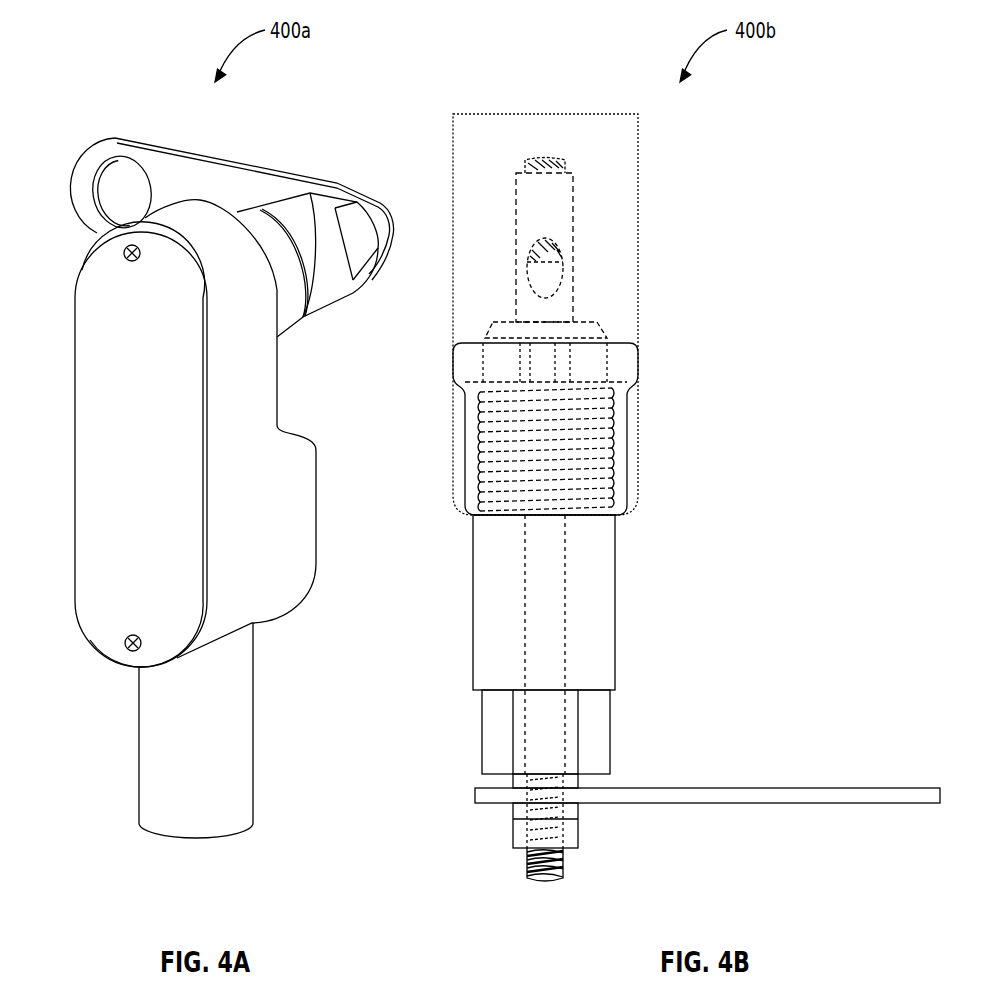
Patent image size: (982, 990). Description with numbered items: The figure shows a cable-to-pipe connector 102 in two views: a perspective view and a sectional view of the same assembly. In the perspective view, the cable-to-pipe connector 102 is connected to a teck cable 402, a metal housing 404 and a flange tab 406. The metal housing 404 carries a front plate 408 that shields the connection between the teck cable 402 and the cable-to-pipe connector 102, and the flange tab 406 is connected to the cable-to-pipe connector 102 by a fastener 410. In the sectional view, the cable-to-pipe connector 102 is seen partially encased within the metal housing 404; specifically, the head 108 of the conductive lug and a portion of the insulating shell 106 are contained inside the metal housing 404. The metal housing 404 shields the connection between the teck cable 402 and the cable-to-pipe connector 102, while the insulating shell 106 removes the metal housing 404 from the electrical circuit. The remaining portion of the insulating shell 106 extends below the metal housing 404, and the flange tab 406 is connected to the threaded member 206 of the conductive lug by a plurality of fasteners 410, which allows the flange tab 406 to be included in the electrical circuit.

In FIG. 4A, the cable-to-pipe connector 102 is at (336, 325).
In FIG. 4B, the cable-to-pipe connector 102 is at (652, 583).
In FIG. 4B, the insulating shell 106 is at (487, 562).
In FIG. 4B, the head 108 is at (550, 198).
In FIG. 4B, the threaded member 206 is at (548, 882).
In FIG. 4A, the teck cable 402 is at (167, 732).
In FIG. 4A, the metal housing 404 is at (273, 513).
In FIG. 4B, the metal housing 404 is at (612, 242).
In FIG. 4A, the flange tab 406 is at (253, 185).
In FIG. 4B, the flange tab 406 is at (748, 786).
In FIG. 4A, the front plate 408 is at (123, 393).
In FIG. 4A, the fastener 410 is at (360, 220).
In FIG. 4B, the fastener 410 is at (517, 785).